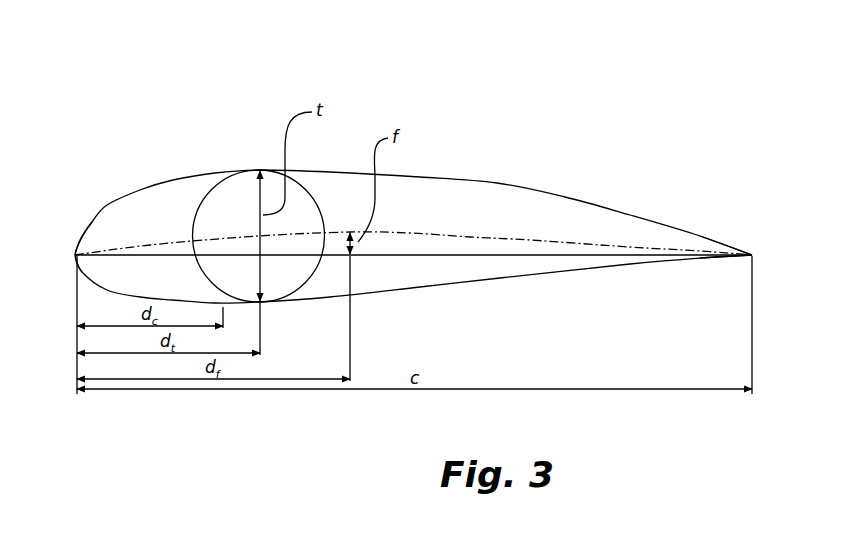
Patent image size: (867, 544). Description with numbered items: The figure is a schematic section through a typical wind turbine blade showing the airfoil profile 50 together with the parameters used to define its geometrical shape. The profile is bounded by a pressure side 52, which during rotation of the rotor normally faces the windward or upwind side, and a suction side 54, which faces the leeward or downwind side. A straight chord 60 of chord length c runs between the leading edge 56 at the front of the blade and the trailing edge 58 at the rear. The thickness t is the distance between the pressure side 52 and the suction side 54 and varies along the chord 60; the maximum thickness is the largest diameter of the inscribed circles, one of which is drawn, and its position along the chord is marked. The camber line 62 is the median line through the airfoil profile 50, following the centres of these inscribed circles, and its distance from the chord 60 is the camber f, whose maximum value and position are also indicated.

The airfoil profile 50 is at (413, 193).
The pressure side 52 is at (548, 276).
The suction side 54 is at (497, 184).
The leading edge 56 is at (76, 256).
The trailing edge 58 is at (752, 254).
The chord 60 is at (580, 254).
The camber line 62 is at (405, 232).